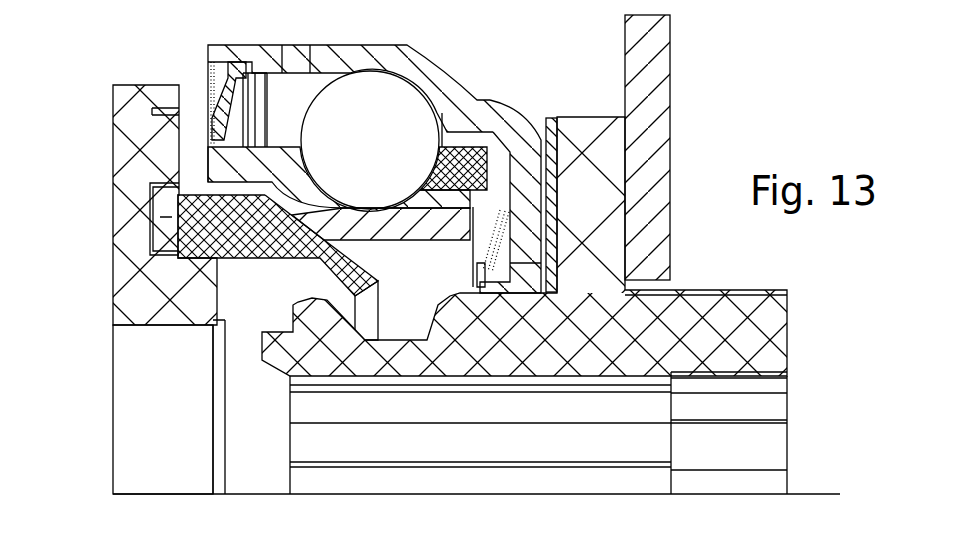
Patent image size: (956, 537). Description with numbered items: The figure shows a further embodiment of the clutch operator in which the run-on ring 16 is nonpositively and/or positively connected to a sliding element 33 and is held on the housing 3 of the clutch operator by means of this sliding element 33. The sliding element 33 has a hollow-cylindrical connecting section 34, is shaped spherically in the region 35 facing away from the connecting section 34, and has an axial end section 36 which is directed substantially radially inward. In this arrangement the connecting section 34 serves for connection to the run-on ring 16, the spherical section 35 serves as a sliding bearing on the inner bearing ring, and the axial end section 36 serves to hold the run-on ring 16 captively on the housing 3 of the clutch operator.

The housing 3 is at (750, 343).
The run-on ring 16 is at (140, 367).
The sliding element 33 is at (270, 235).
The connecting section 34 is at (247, 267).
The spherical section 35 is at (327, 285).
The axial end section 36 is at (370, 314).